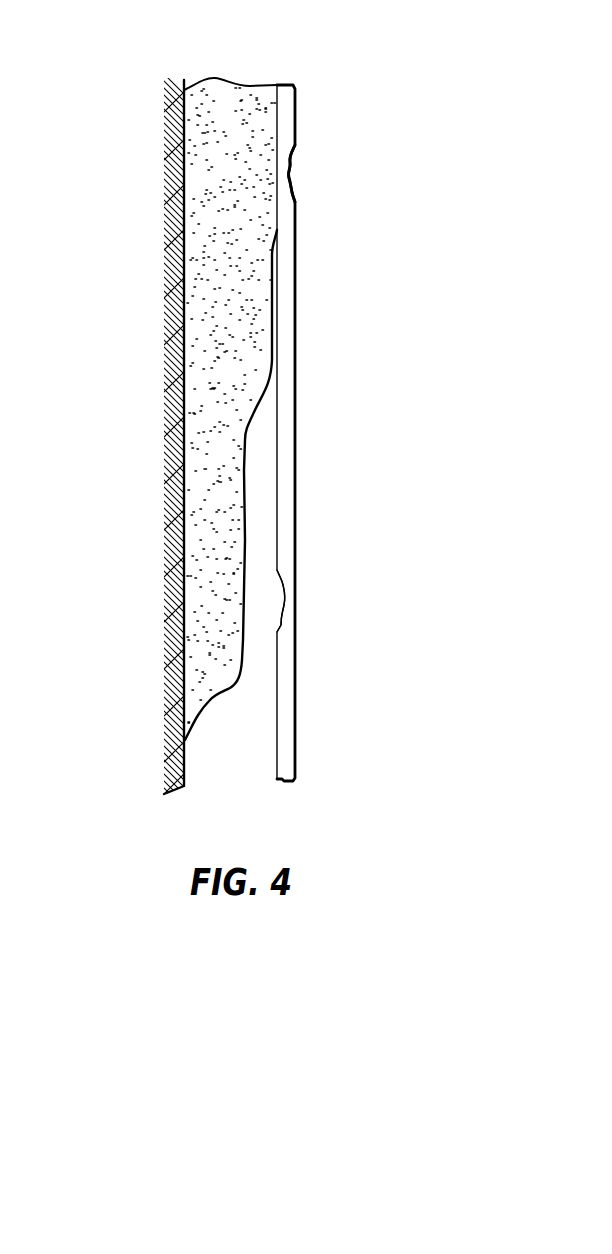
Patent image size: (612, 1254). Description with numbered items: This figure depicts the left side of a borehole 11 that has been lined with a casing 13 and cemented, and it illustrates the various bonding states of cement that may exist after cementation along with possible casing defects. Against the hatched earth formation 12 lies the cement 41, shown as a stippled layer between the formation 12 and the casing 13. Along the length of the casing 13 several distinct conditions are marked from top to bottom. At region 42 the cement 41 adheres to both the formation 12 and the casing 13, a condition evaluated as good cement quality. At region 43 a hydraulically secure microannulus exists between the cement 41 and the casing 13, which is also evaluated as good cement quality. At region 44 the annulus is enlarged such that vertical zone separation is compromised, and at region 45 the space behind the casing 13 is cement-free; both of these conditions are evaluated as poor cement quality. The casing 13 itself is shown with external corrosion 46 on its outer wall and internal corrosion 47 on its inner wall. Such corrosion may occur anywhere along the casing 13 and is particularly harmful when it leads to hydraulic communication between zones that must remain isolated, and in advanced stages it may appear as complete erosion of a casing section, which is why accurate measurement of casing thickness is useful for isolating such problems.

The borehole 11 is at (405, 415).
The formation 12 is at (176, 302).
The casing 13 is at (287, 90).
The cement 41 is at (205, 100).
The region of adhering cement 42 is at (340, 199).
The hydraulically secure microannulus region 43 is at (340, 320).
The enlarged annulus region 44 is at (340, 519).
The cement-free region 45 is at (345, 742).
The external corrosion 46 is at (291, 183).
The internal corrosion 47 is at (285, 594).